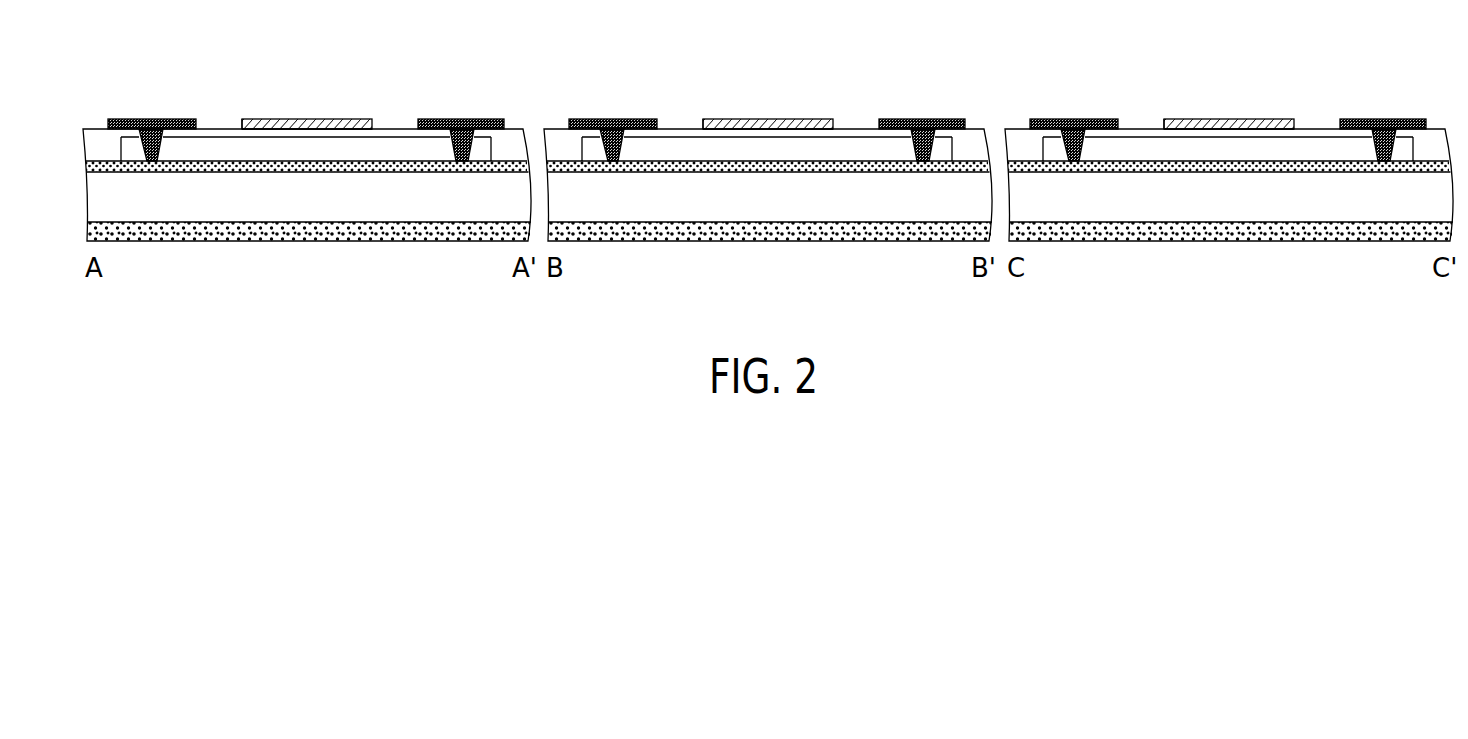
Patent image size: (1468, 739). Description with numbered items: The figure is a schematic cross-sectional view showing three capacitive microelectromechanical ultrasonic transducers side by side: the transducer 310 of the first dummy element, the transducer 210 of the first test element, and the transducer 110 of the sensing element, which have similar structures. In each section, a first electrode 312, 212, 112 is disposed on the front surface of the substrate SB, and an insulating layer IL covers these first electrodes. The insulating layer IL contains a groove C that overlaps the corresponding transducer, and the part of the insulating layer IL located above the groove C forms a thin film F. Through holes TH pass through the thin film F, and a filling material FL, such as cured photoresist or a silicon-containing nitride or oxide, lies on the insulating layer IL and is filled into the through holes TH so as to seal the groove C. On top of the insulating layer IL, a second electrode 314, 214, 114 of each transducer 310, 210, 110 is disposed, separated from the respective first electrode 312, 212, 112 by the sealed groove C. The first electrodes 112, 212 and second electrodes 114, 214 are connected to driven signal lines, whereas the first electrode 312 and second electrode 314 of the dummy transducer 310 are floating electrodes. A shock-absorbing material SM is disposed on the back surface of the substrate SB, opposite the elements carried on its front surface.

The capacitive microelectromechanical ultrasonic transducer 310 is at (245, 112).
The first electrode 312 is at (266, 168).
The second electrode 314 is at (307, 125).
The capacitive microelectromechanical ultrasonic transducer 210 is at (682, 86).
The first electrode 212 is at (768, 106).
The second electrode 214 is at (768, 86).
The capacitive microelectromechanical ultrasonic transducer 110 is at (1143, 86).
The first electrode 112 is at (1229, 106).
The second electrode 114 is at (1229, 86).
The thin film F is at (358, 133).
The groove C is at (398, 150).
The through hole TH is at (453, 137).
The filling material FL is at (487, 128).
The insulating layer IL is at (558, 148).
The substrate SB is at (640, 200).
The shock-absorbing material SM is at (697, 228).